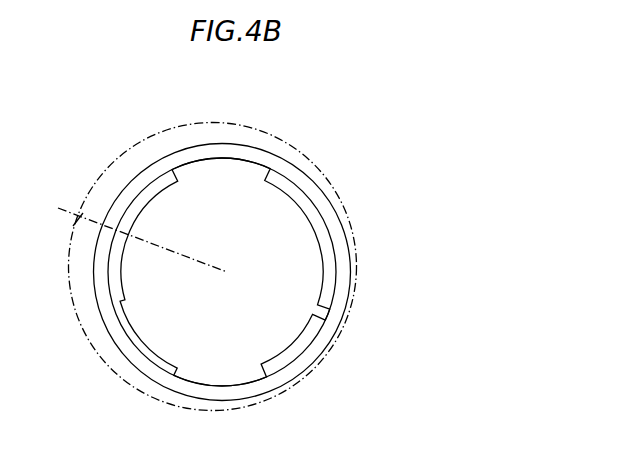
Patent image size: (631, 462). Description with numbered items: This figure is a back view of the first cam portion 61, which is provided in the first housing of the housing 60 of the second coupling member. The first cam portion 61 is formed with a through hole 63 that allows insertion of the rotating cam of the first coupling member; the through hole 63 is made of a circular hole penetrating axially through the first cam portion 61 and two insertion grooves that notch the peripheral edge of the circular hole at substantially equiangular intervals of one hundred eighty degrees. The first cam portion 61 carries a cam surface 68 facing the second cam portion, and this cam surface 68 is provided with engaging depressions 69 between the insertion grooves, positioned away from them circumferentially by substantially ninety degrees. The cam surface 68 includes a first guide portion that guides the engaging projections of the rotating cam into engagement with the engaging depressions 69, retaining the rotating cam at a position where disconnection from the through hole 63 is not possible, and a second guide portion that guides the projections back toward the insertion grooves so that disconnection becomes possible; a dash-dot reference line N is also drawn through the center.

The housing 60 is at (213, 264).
The first cam portion 61 is at (222, 272).
The through hole 63 is at (195, 273).
The cam surface 68 is at (225, 272).
The engaging depressions 69 is at (218, 297).
The magnetic pole axis N (N') N is at (134, 216).